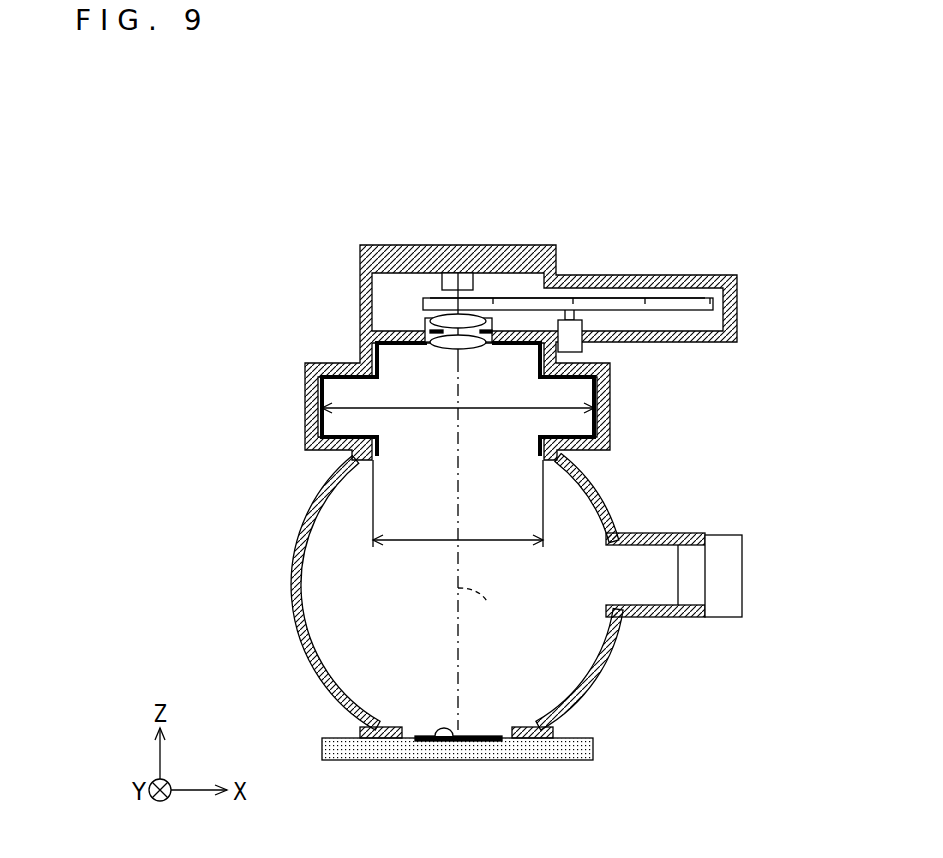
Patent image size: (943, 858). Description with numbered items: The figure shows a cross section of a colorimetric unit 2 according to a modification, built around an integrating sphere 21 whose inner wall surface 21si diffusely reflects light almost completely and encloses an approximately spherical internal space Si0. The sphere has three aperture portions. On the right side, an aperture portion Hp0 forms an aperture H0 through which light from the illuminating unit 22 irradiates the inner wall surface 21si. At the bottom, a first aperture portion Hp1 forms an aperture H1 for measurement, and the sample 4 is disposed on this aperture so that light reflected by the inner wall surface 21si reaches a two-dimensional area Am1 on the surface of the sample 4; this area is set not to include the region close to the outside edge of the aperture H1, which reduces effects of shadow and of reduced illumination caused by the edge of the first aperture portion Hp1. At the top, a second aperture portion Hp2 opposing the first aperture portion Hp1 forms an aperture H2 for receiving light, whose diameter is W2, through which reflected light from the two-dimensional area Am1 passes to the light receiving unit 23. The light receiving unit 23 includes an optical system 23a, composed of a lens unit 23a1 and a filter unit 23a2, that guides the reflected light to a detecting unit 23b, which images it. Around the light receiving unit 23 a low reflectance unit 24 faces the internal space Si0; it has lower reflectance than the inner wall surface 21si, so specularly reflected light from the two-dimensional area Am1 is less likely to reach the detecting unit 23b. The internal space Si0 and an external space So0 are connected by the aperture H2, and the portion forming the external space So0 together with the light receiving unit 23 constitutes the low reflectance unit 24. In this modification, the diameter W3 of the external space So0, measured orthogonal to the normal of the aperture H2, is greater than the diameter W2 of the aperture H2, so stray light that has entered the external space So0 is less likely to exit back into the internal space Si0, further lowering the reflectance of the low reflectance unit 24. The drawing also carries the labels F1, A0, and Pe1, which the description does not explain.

The colorimetric unit 2 is at (355, 218).
The light receiving unit 23 is at (353, 285).
The optical system 23a is at (512, 149).
The lens unit 23a1 is at (425, 320).
The filter unit 23a2 is at (427, 296).
The detecting unit 23b is at (460, 282).
The substrate surface F1 is at (480, 296).
The external space So0 is at (408, 357).
The low reflectance unit 24 is at (530, 352).
The diameter of the external space W3 is at (458, 419).
The integrating sphere 21 is at (310, 497).
The inner wall surface 21si is at (330, 670).
The internal space Si0 is at (350, 603).
The aperture for receiving light H2 is at (410, 447).
The second aperture portion Hp2 is at (543, 448).
The diameter of the aperture for receiving light W2 is at (458, 516).
The optical axis angle A0 is at (482, 613).
The aperture for measurement H1 is at (472, 723).
The first aperture portion Hp1 is at (513, 724).
The illuminating unit 22 is at (723, 622).
The aperture for irradiating H0 is at (612, 575).
The aperture portion Hp0 is at (609, 605).
The sample 4 is at (580, 759).
The measurement object Pe1 is at (415, 741).
The two-dimensional area Am1 is at (448, 742).